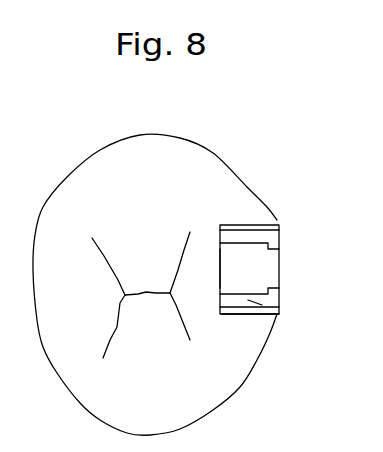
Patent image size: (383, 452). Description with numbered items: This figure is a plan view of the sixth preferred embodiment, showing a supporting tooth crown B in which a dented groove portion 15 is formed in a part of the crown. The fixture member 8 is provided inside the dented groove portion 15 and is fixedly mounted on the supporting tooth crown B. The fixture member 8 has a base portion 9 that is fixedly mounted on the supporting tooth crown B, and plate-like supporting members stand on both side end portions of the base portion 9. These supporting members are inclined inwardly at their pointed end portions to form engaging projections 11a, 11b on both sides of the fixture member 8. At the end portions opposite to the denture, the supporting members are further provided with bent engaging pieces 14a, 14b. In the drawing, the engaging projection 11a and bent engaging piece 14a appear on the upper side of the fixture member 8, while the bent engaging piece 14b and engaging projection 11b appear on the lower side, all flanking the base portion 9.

The supporting tooth crown B is at (85, 163).
The fixture member 8 is at (278, 220).
The engaging projection 11a is at (258, 237).
The bent engaging piece 14a is at (270, 245).
The base portion 9 is at (265, 273).
The bent engaging piece 14b is at (276, 289).
The engaging projection 11b is at (268, 312).
The dented groove portion 15 is at (235, 313).